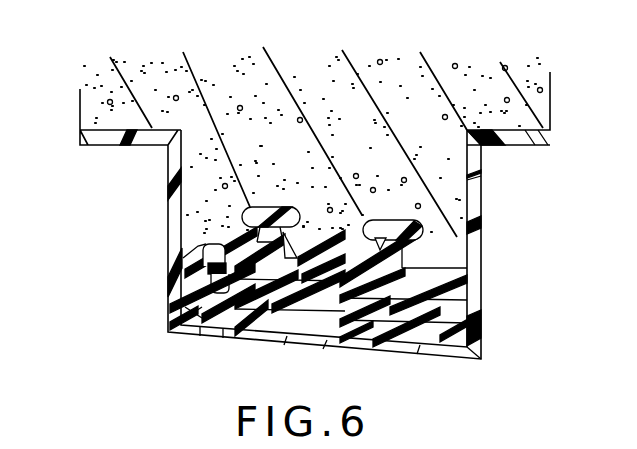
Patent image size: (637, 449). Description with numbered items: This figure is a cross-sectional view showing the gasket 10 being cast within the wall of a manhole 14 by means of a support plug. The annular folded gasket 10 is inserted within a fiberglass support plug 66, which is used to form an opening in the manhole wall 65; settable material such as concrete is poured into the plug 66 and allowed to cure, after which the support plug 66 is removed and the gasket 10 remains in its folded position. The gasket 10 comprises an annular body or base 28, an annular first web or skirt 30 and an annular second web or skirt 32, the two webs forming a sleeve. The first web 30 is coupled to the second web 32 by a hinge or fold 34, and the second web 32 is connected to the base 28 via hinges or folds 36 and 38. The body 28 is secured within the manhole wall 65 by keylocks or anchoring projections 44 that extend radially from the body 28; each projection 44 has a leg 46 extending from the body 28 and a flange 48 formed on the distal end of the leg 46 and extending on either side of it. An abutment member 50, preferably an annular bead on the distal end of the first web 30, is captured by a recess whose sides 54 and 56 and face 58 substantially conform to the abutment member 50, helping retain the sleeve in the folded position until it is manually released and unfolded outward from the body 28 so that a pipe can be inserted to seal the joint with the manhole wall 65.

The gasket 10 is at (483, 306).
The manhole 14 is at (88, 73).
The annular body or base 28 is at (460, 269).
The annular first web or skirt 30 is at (268, 292).
The annular second web or skirt 32 is at (230, 318).
The hinge or fold 34 is at (473, 330).
The hinge or fold 36 is at (200, 305).
The hinge or fold 38 is at (215, 245).
The keylock or anchoring projection 44 is at (245, 229).
The leg 46 is at (256, 212).
The flange 48 is at (267, 207).
The abutment member 50 is at (213, 288).
The side of recess 54 is at (200, 265).
The side of recess 56 is at (172, 297).
The face of recess 58 is at (243, 238).
The manhole wall 65 is at (453, 212).
The fiberglass support plug 66 is at (460, 350).